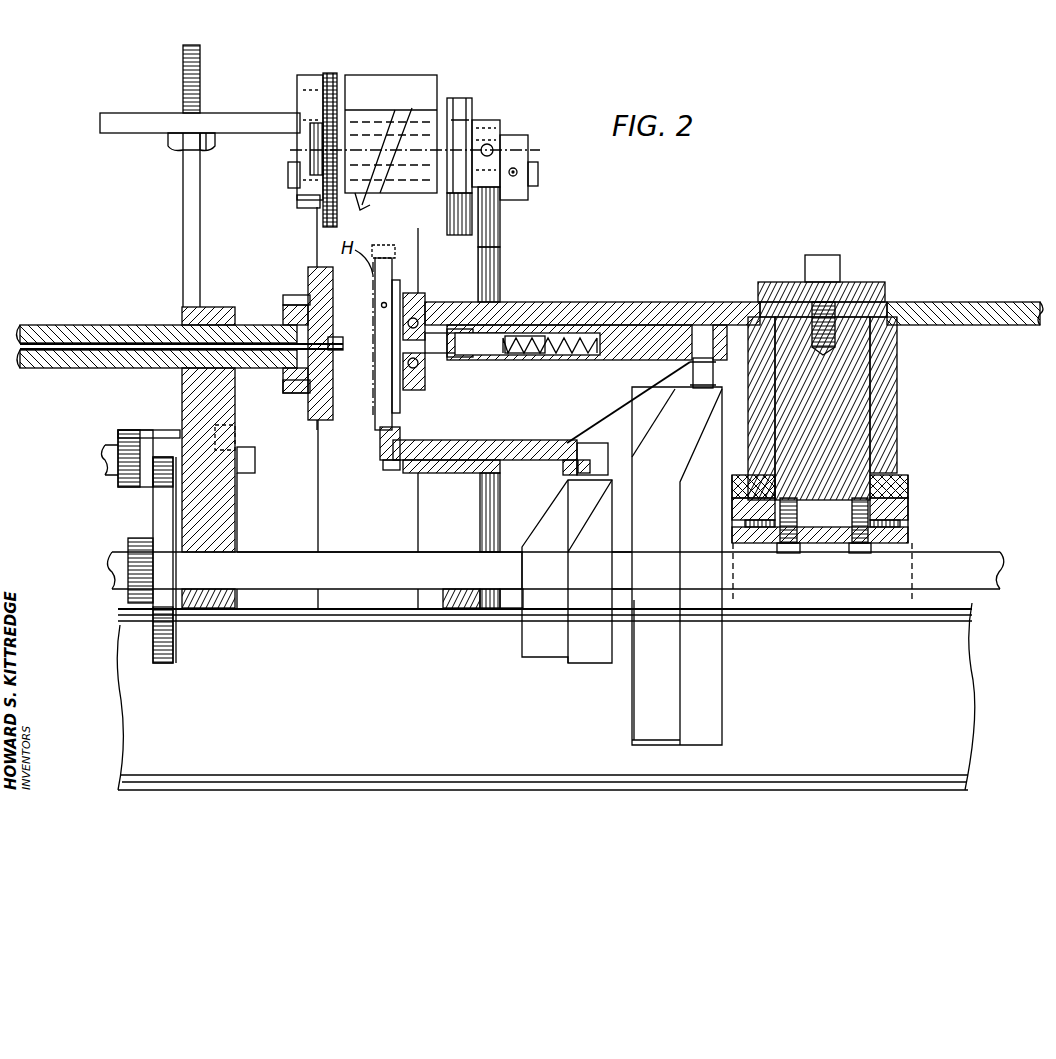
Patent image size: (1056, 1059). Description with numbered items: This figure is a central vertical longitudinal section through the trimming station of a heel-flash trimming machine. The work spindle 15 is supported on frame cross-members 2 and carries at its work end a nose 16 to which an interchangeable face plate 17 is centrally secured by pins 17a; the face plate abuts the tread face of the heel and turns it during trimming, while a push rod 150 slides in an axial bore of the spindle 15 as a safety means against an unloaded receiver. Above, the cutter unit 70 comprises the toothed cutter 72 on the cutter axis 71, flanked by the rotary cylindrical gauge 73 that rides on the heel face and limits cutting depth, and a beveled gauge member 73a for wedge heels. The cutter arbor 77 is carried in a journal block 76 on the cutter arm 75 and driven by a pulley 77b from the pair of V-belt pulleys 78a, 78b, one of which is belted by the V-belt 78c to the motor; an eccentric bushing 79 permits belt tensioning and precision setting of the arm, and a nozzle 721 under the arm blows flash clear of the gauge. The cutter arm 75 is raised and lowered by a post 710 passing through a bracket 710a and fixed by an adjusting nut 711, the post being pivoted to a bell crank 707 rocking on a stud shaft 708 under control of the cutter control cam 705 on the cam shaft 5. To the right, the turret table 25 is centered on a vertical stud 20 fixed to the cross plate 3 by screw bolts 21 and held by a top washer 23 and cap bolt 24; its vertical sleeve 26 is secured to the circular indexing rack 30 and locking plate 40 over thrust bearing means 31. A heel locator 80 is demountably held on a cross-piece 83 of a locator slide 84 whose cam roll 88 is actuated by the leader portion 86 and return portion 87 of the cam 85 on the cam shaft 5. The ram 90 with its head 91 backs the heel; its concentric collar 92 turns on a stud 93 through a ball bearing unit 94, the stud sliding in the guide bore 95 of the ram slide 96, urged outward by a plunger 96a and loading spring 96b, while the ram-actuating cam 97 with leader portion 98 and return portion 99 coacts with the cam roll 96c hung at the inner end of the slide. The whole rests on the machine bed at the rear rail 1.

The rear rail 1 is at (958, 712).
The frame cross-member 2 is at (232, 523).
The cross plate 3 is at (912, 537).
The cam shaft 5 is at (282, 582).
The spindle 15 is at (83, 326).
The nose 16 is at (300, 295).
The face plate 17 is at (328, 268).
The pins 17a is at (283, 301).
The turret centering vertical stud 20 is at (855, 378).
The screw bolts 21 is at (860, 556).
The top washer 23 is at (885, 292).
The cap bolt 24 is at (840, 262).
The turret table 25 is at (972, 302).
The vertical sleeve 26 is at (888, 407).
The circular indexing rack 30 is at (910, 510).
The thrust bearing means 31 is at (900, 524).
The locking plate 40 is at (905, 485).
The cutter unit 70 is at (331, 52).
The cutter axis 71 is at (300, 152).
The toothed cutter 72 is at (318, 70).
The rotary cylindrical gauge 73 is at (336, 78).
The beveled rotary gauge member 73a is at (380, 60).
The cutter arm 75 is at (420, 117).
The journal block 76 is at (455, 99).
The cutter arbor 77 is at (300, 165).
The pulley 77b is at (476, 112).
The V-belt pulley 78a is at (455, 228).
The V-belt pulley 78b is at (504, 225).
The V-belt 78c is at (503, 272).
The eccentric bushing 79 is at (305, 204).
The heel locator 80 is at (380, 445).
The cross-piece 83 is at (386, 465).
The locator slide 84 is at (470, 452).
The cam 85 is at (537, 622).
The leader portion 86 is at (548, 500).
The return portion 87 is at (580, 530).
The cam roll 88 is at (615, 462).
The clamping holder or ram 90 is at (385, 318).
The ram head 91 is at (395, 340).
The concentric collar 92 is at (415, 392).
The stud 93 is at (490, 355).
The ball bearing unit 94 is at (418, 368).
The guide bore 95 is at (500, 325).
The ram slide 96 is at (633, 322).
The plunger 96a is at (535, 355).
The loading spring 96b is at (570, 355).
The cam roll 96c is at (693, 371).
The ram-actuating cam 97 is at (644, 681).
The leader portion 98 is at (692, 445).
The return portion 99 is at (662, 413).
The push rod 150 is at (338, 352).
The cutter control cam 705 is at (160, 626).
The bell crank 707 is at (148, 516).
The stud shaft 708 is at (100, 462).
The post 710 is at (200, 265).
The bracket 710a is at (132, 133).
The adjusting nut 711 is at (177, 152).
The nozzle 721 is at (364, 205).